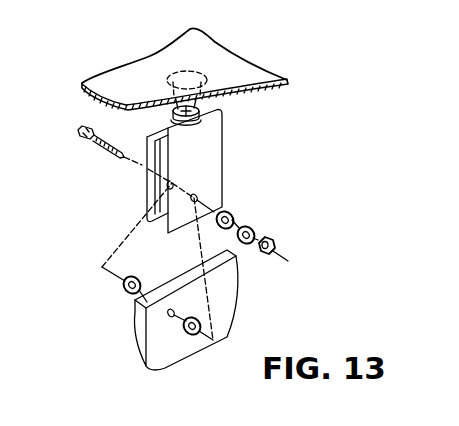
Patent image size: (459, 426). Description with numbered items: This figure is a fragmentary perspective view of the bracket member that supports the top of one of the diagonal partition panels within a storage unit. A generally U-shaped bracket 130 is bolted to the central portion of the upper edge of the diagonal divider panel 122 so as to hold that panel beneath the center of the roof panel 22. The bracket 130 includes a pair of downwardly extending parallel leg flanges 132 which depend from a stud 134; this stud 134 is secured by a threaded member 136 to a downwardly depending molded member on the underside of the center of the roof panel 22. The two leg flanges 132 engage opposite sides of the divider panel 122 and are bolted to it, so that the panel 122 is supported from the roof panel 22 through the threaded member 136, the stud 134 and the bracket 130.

The roof panel 22 is at (197, 45).
The threaded member 136 is at (203, 77).
The stud 134 is at (227, 111).
The leg flanges 132 is at (208, 158).
The U-shaped bracket 130 is at (232, 185).
The divider panel 122 is at (223, 295).